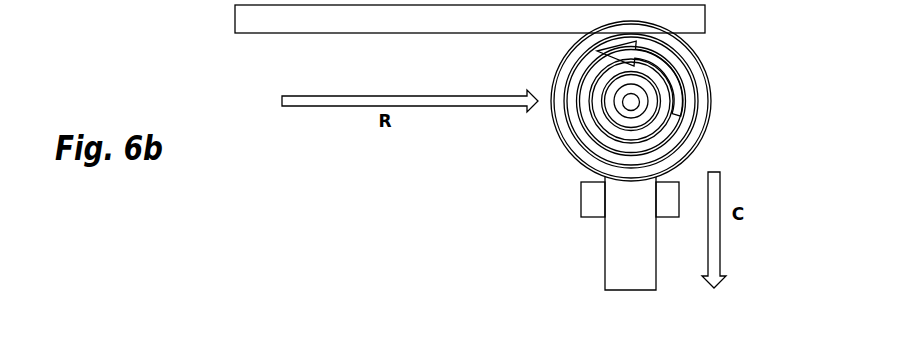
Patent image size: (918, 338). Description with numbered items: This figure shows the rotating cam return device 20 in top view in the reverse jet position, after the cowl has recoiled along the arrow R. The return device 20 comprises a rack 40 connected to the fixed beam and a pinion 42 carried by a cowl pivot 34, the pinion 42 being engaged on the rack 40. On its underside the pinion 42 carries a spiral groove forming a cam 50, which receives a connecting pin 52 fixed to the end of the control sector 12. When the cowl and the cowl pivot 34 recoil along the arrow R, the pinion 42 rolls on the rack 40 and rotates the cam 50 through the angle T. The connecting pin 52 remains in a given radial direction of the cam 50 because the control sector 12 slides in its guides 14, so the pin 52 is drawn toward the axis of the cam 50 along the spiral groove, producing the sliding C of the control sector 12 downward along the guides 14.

The control sector 12 is at (605, 276).
The guides 14 is at (581, 208).
The return device 20 is at (737, 60).
The cowl pivot 34 is at (640, 113).
The rack 40 is at (415, 33).
The pinion 42 is at (562, 148).
The cam 50 is at (553, 71).
The connecting pin 52 is at (630, 85).